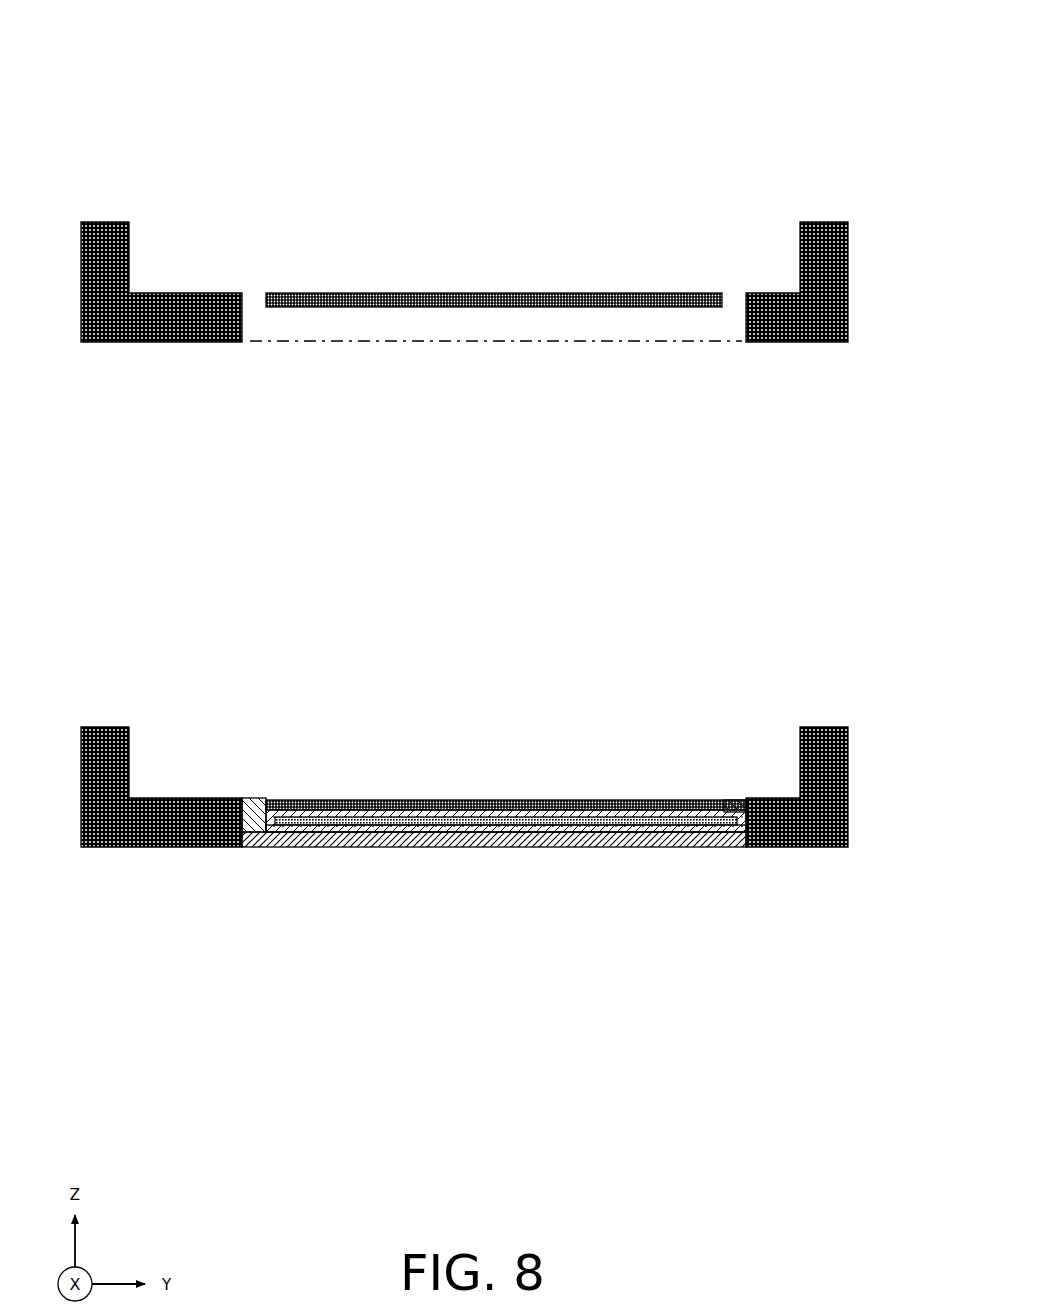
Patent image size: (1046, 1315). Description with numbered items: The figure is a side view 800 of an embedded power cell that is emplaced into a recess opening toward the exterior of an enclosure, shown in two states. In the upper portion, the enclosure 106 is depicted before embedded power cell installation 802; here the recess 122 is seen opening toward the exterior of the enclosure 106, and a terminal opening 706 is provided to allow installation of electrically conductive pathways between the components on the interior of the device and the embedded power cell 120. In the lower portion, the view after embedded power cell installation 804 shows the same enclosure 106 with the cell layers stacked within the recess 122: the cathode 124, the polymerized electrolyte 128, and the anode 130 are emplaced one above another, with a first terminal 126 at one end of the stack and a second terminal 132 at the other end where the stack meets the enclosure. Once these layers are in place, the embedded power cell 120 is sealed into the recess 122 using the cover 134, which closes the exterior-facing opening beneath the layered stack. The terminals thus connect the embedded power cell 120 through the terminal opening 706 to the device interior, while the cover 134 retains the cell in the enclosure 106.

The side view 800 is at (733, 60).
The before embedded power cell installation 802 is at (355, 146).
The after embedded power cell installation 804 is at (355, 561).
The enclosure 106 is at (131, 325).
The terminal opening 706 is at (729, 288).
The recess 122 is at (451, 333).
The embedded power cell 120 is at (493, 847).
The cathode 124 is at (545, 805).
The first terminal 126 is at (266, 790).
The polymerized electrolyte 128 is at (493, 822).
The anode 130 is at (345, 842).
The second terminal 132 is at (733, 749).
The cover 134 is at (614, 843).